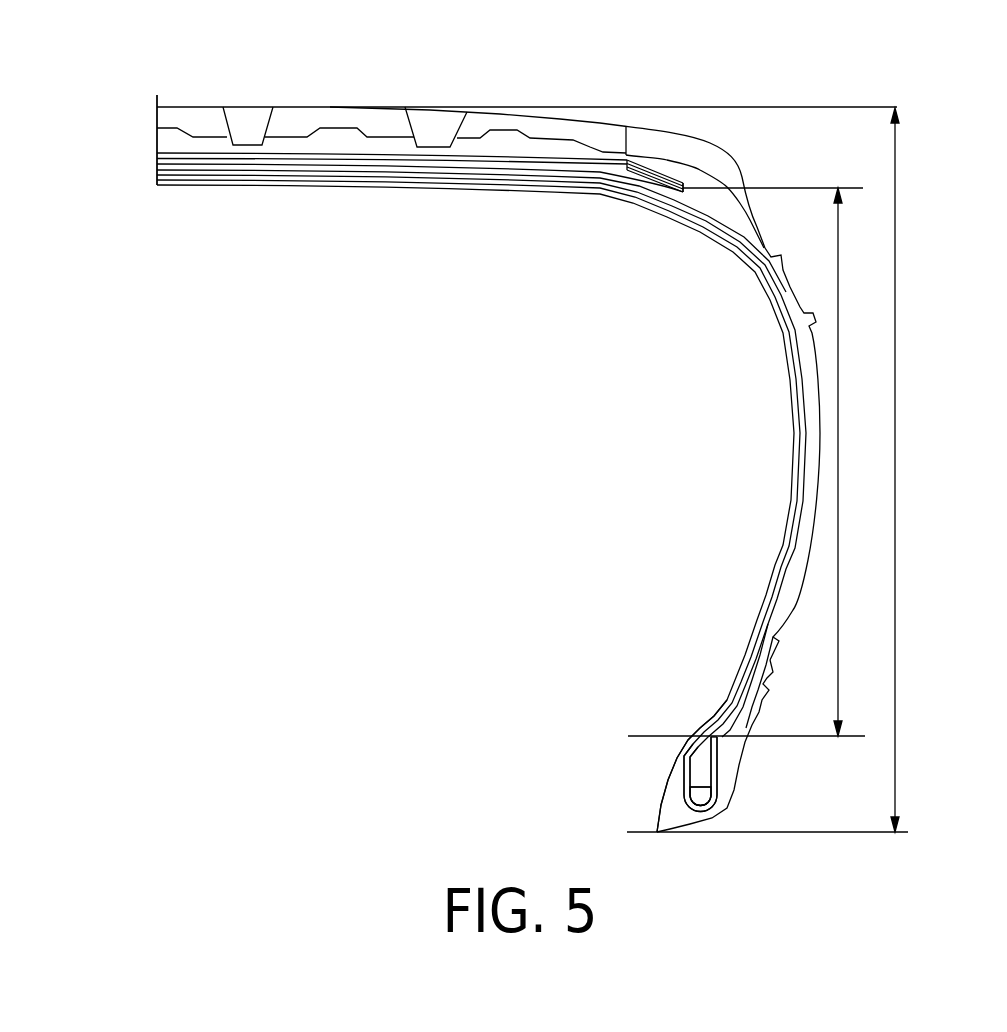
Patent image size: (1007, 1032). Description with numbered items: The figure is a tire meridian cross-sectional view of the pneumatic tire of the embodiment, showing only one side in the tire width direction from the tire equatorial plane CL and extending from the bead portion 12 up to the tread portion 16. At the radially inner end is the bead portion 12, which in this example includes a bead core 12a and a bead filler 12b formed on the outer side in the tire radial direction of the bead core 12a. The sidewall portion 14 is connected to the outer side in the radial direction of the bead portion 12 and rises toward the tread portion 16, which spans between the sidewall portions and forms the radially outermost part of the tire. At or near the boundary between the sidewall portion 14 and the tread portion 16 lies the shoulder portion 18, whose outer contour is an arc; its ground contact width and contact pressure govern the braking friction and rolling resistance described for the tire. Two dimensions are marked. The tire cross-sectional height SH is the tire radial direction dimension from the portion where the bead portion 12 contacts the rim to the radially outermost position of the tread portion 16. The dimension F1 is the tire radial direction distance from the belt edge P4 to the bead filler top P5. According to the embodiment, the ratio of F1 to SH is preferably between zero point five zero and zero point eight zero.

The bead portion 12 is at (668, 728).
The bead core 12a is at (693, 797).
The bead filler 12b is at (700, 768).
The sidewall portion 14 is at (813, 380).
The tread portion 16 is at (298, 117).
The shoulder portion 18 is at (715, 150).
The belt edge P4 is at (660, 183).
The bead filler top P5 is at (717, 735).
The tire equatorial plane CL is at (157, 140).
The tire radial direction dimension from belt edge to bead filler top F1 is at (750, 462).
The tire cross-sectional height SH is at (780, 470).